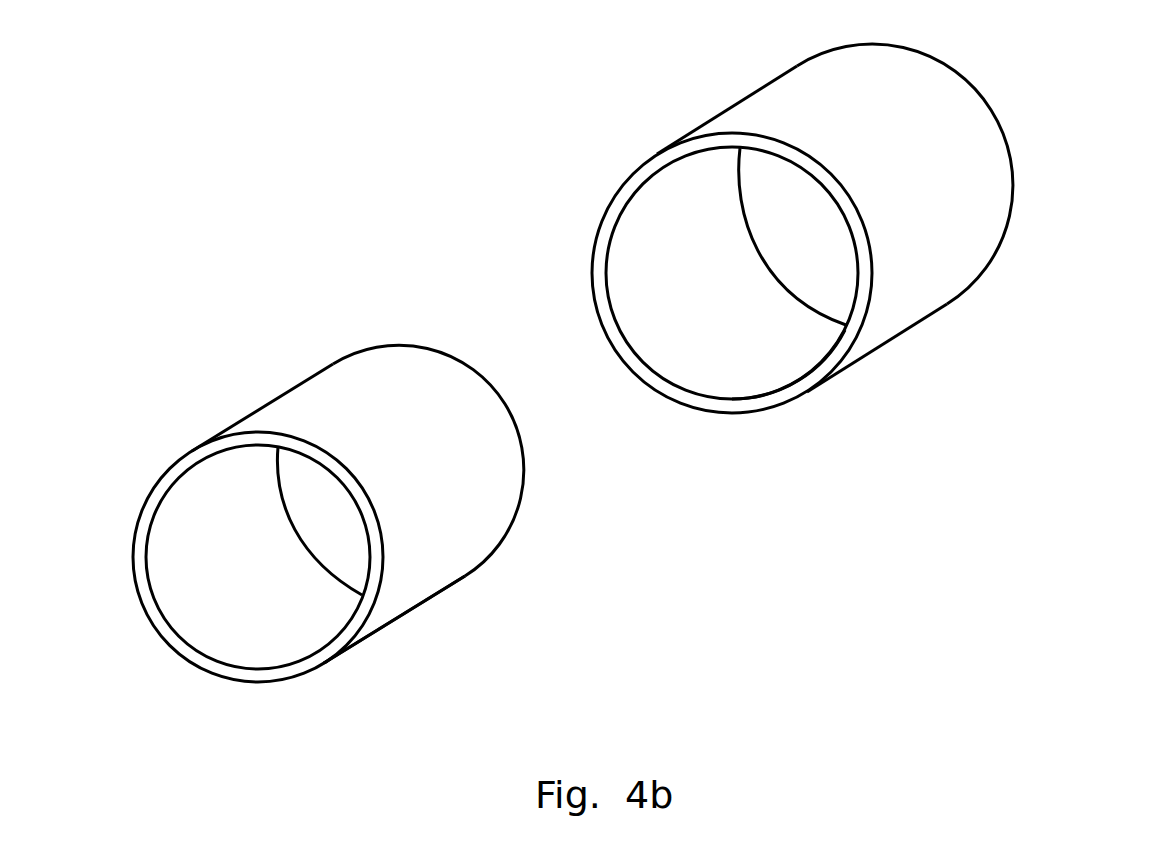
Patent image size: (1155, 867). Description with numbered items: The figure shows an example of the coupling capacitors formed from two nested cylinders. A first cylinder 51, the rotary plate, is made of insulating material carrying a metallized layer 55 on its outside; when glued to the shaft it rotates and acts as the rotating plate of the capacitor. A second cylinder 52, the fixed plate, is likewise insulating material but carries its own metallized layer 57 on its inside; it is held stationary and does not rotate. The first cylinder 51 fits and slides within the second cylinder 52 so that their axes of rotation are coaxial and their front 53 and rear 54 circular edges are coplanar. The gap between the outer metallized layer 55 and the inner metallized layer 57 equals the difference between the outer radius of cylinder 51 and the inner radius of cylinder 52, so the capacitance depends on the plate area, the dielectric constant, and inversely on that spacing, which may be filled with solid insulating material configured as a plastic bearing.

The first cylinder 51 is at (425, 611).
The second cylinder 52 is at (1022, 172).
The front circular edge 53 is at (167, 633).
The rear circular edge 54 is at (303, 548).
The metallized layer 55 is at (455, 547).
The metallized layer 57 is at (715, 367).